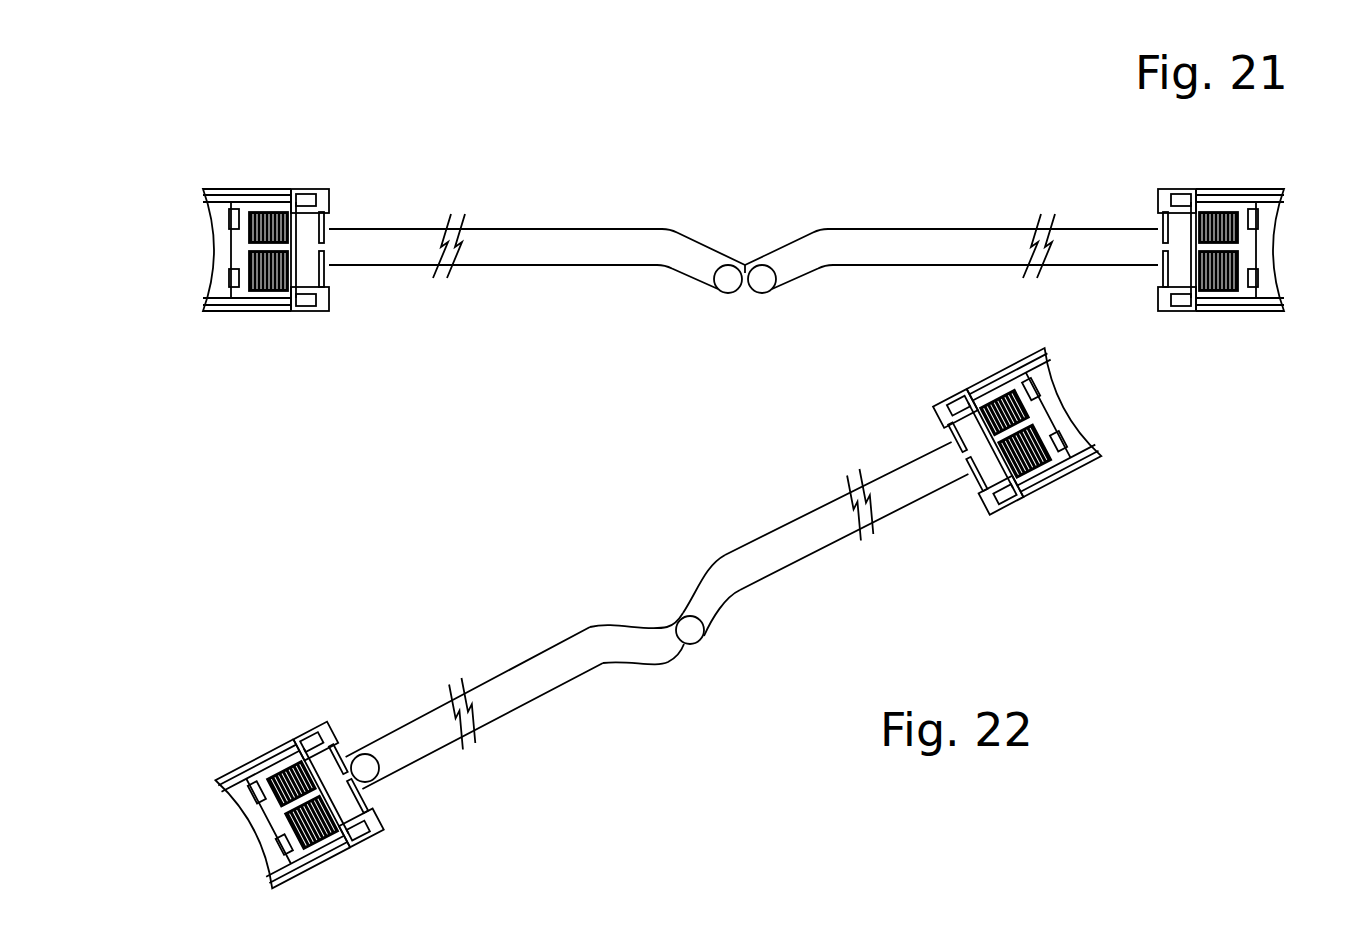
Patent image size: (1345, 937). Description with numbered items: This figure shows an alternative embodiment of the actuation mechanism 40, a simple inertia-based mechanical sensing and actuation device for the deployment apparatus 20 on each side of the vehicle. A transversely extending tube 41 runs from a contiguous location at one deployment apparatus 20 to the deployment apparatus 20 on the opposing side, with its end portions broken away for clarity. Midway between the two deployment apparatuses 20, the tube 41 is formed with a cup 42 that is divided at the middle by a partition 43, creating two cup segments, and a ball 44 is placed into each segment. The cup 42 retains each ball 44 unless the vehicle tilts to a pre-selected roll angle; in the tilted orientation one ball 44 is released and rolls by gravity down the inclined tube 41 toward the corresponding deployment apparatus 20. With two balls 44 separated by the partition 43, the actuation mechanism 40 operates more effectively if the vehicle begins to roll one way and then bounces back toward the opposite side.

In FIG. 21, the deployment apparatus 20 is at (268, 190).
In FIG. 22, the deployment apparatus 20 is at (1050, 478).
In FIG. 21, the actuation mechanism 40 is at (878, 142).
In FIG. 22, the actuation mechanism 40 is at (527, 497).
In FIG. 21, the transversely extending tube 41 is at (561, 228).
In FIG. 22, the transversely extending tube 41 is at (770, 532).
In FIG. 21, the cup 42 is at (681, 276).
In FIG. 22, the cup 42 is at (688, 603).
In FIG. 21, the partition 43 is at (741, 262).
In FIG. 22, the partition 43 is at (669, 628).
In FIG. 21, the ball 44 is at (727, 283).
In FIG. 22, the ball 44 is at (692, 630).